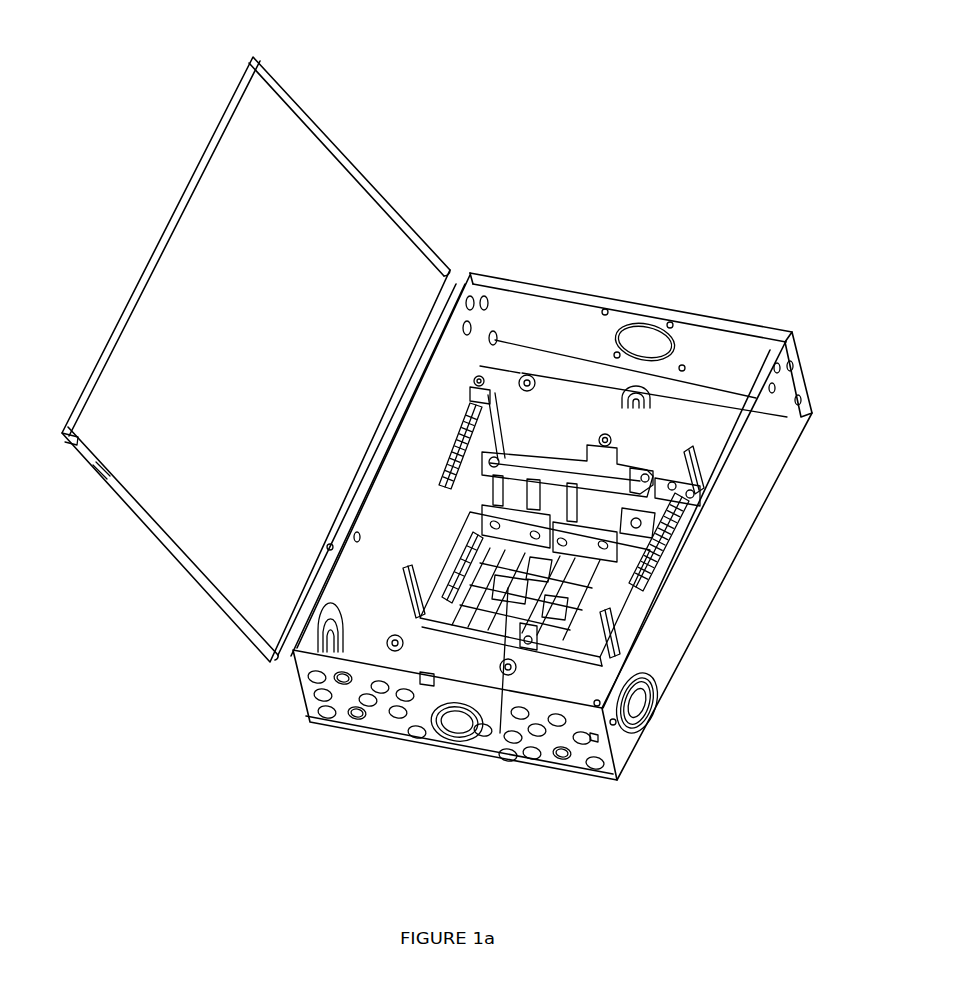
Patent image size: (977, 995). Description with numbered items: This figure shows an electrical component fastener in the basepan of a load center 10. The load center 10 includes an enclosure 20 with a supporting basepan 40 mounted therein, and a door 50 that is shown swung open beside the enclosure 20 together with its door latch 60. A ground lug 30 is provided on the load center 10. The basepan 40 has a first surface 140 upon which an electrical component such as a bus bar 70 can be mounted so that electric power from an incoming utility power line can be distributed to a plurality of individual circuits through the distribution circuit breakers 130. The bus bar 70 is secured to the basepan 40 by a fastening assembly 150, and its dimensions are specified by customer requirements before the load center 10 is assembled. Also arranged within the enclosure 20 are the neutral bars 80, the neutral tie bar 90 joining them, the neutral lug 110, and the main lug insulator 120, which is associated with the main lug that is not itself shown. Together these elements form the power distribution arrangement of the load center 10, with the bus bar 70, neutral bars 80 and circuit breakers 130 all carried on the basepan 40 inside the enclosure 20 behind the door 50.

The load center 10 is at (634, 405).
The enclosure 20 is at (503, 267).
The ground lug 30 is at (492, 372).
The supporting basepan 40 is at (642, 461).
The door 50 is at (360, 163).
The door latch 60 is at (585, 737).
The bus bar 70 is at (510, 588).
The neutral bar 80 is at (650, 580).
The neutral tie bar 90 is at (645, 512).
The neutral lug 110 is at (698, 492).
The main lug insulator 120 is at (535, 458).
The distribution circuit breakers 130 is at (641, 619).
The first surface 140 is at (485, 612).
The fastening assembly 150 is at (580, 543).